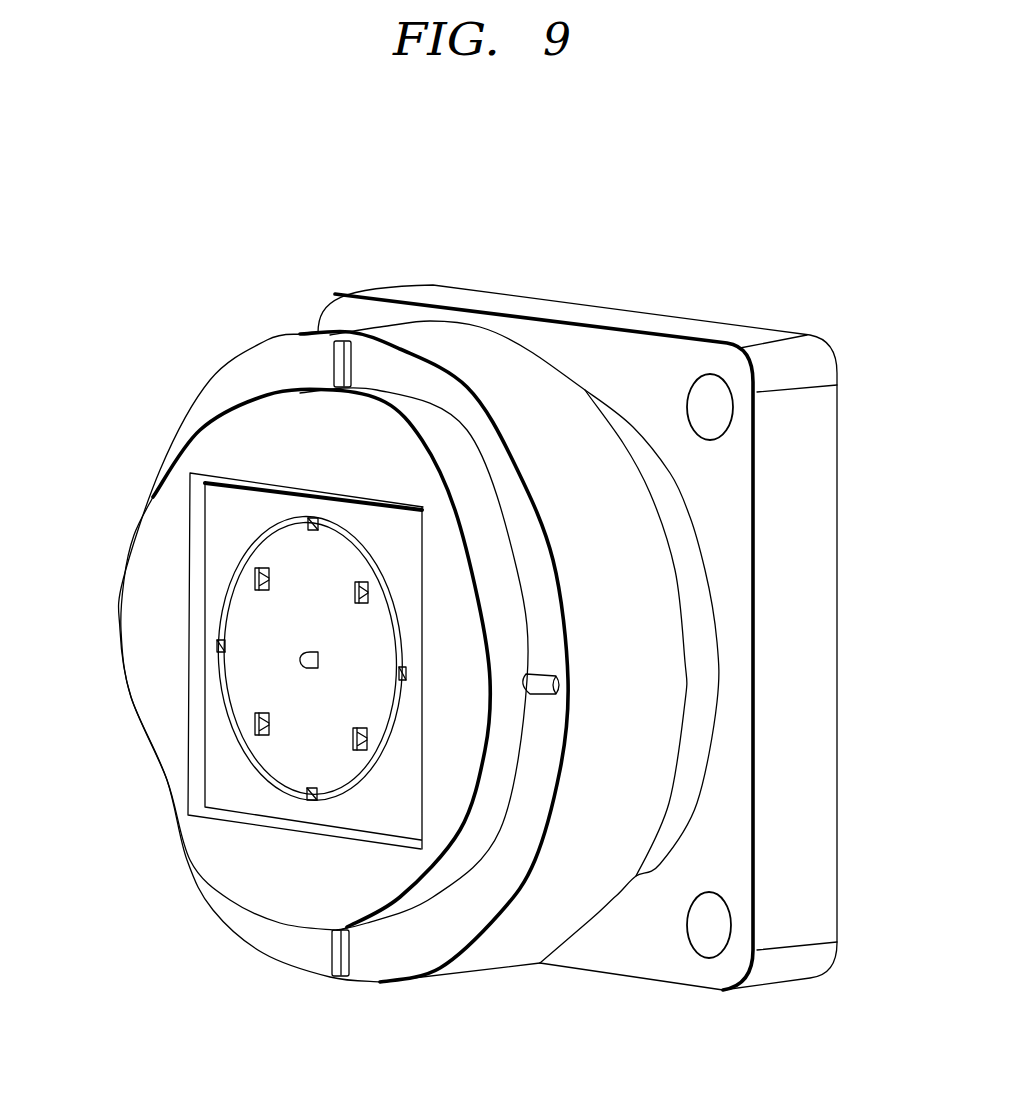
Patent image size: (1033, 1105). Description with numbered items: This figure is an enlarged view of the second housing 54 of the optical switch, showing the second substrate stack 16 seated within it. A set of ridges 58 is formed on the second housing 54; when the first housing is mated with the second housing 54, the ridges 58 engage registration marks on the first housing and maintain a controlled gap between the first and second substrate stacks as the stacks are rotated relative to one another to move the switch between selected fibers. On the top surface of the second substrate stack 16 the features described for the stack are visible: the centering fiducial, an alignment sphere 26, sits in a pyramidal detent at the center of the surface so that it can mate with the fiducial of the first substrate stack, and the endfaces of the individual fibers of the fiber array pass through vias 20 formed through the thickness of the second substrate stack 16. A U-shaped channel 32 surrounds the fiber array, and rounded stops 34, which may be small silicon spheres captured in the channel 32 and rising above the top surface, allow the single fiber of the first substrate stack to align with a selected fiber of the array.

The second housing 54 is at (354, 310).
The ridges 58 is at (346, 360).
The second substrate stack 16 is at (223, 523).
The channel 32 is at (230, 596).
The rounded stops 34 is at (217, 645).
The vias 20 is at (253, 728).
The alignment sphere 26 is at (317, 653).